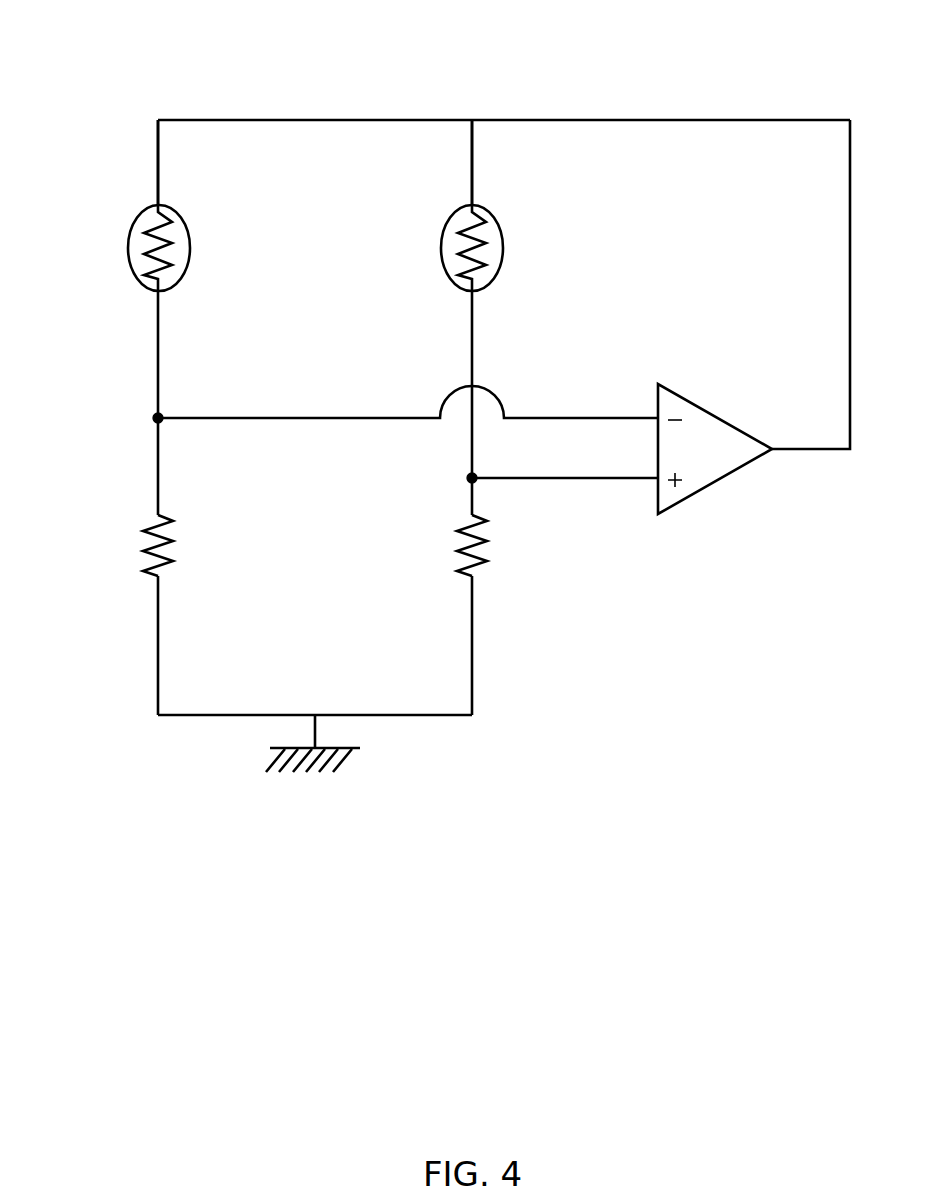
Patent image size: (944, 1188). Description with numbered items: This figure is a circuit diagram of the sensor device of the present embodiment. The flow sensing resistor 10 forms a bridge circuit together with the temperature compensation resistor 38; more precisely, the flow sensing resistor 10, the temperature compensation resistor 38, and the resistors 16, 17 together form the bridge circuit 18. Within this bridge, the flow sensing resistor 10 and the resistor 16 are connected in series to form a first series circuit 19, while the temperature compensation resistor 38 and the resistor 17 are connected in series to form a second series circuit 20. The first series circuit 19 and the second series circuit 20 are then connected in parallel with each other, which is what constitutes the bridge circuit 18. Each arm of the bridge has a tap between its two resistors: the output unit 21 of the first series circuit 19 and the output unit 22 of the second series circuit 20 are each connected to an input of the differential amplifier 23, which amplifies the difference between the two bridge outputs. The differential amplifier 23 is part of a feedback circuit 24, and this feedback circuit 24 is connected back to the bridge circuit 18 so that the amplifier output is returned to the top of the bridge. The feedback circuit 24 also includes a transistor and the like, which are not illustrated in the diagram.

The flow sensing resistor 10 is at (442, 258).
The resistor 16 is at (488, 540).
The resistor 17 is at (143, 548).
The bridge circuit 18 is at (343, 106).
The first series circuit 19 is at (472, 163).
The second series circuit 20 is at (158, 163).
The output unit 21 is at (468, 480).
The output unit 22 is at (155, 420).
The differential amplifier 23 is at (716, 484).
The feedback circuit 24 is at (811, 106).
The temperature compensation resistor 38 is at (128, 250).